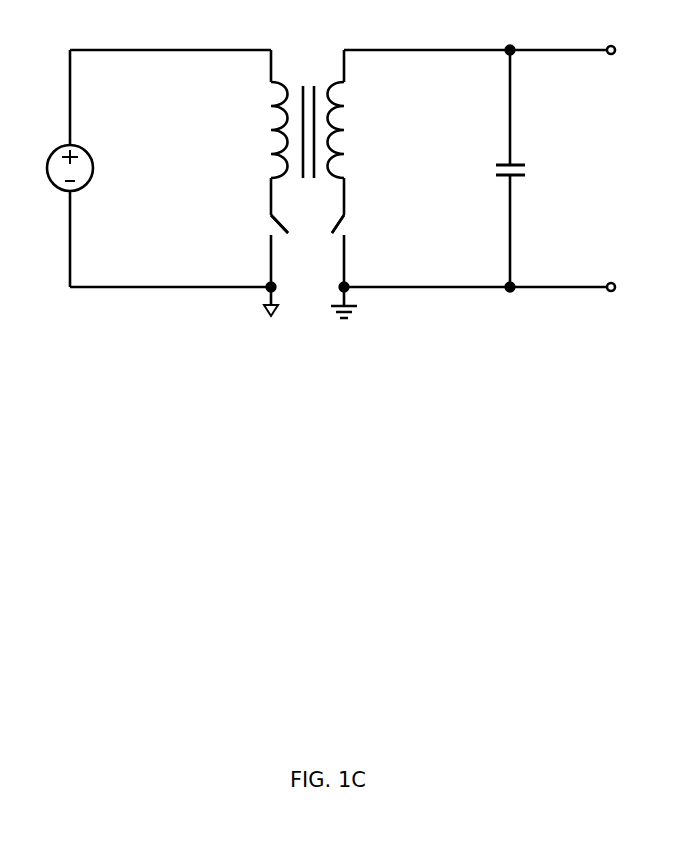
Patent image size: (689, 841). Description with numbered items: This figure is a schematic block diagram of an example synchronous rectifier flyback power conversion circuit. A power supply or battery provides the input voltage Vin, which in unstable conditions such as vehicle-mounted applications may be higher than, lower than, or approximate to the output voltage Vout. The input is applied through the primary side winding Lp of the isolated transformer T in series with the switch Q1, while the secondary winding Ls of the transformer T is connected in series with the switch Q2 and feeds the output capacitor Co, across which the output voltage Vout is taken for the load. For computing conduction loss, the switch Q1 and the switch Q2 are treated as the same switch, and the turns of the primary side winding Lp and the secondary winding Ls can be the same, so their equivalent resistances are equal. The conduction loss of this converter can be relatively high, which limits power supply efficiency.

The input voltage Vin is at (85, 168).
The isolated transformer T is at (305, 96).
The primary side winding Lp is at (264, 130).
The secondary winding Ls is at (349, 130).
The switch Q1 is at (260, 265).
The switch Q2 is at (353, 266).
The output capacitor Co is at (525, 168).
The output voltage Vout is at (623, 168).